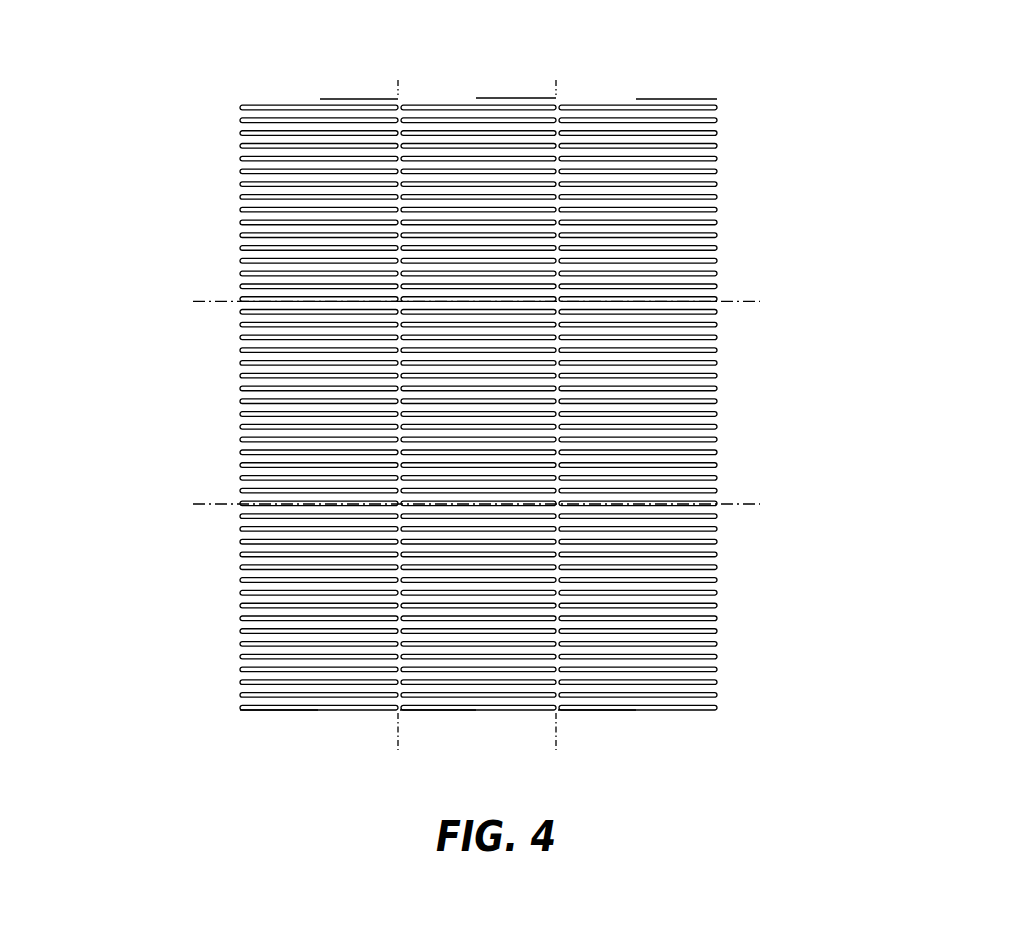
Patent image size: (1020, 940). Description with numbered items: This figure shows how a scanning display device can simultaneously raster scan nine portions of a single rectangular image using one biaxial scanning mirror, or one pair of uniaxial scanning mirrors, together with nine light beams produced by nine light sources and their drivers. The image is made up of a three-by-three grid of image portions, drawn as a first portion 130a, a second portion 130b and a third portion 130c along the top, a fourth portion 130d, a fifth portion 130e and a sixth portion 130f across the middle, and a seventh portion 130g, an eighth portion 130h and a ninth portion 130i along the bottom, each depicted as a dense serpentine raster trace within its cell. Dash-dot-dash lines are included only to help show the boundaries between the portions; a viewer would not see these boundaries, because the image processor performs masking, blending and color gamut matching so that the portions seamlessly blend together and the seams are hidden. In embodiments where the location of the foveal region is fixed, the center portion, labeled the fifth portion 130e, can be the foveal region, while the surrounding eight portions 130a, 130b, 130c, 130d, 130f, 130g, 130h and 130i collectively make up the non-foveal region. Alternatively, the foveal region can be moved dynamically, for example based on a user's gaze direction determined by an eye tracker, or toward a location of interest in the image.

The first portion 130a is at (662, 75).
The second portion 130b is at (496, 75).
The third portion 130c is at (323, 75).
The fourth portion 130d is at (224, 359).
The fifth portion 130e is at (483, 385).
The sixth portion 130f is at (719, 366).
The seventh portion 130g is at (676, 710).
The eighth portion 130h is at (508, 710).
The ninth portion 130i is at (337, 712).